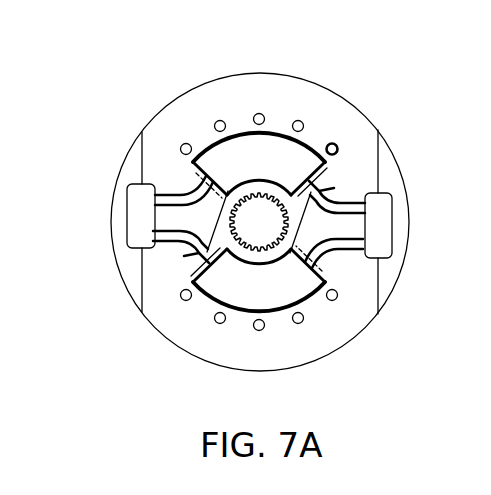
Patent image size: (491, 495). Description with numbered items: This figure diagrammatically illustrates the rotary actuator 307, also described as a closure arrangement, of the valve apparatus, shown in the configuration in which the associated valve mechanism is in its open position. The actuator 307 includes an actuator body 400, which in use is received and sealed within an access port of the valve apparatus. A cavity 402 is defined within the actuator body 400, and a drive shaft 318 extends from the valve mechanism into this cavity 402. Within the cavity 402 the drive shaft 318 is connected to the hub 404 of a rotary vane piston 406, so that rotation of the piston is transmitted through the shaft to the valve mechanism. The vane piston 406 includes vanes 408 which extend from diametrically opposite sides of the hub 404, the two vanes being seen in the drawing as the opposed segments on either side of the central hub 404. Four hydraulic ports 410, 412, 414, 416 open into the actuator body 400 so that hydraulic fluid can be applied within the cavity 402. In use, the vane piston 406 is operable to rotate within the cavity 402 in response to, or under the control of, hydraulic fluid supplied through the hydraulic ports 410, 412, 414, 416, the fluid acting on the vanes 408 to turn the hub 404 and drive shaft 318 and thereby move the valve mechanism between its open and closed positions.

The actuator 307 is at (147, 105).
The drive shaft 318 is at (263, 228).
The actuator body 400 is at (358, 127).
The cavity 402 is at (213, 150).
The hub 404 is at (207, 295).
The rotary vane piston 406 is at (253, 183).
The vanes 408 is at (312, 182).
The hydraulic port 410 is at (197, 190).
The hydraulic port 412 is at (320, 188).
The hydraulic port 414 is at (325, 262).
The hydraulic port 416 is at (188, 260).